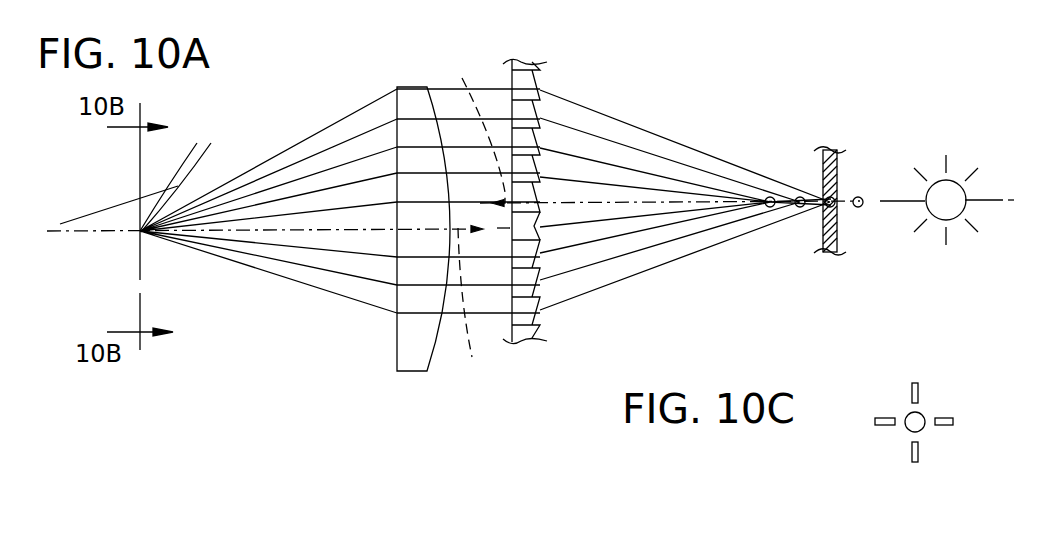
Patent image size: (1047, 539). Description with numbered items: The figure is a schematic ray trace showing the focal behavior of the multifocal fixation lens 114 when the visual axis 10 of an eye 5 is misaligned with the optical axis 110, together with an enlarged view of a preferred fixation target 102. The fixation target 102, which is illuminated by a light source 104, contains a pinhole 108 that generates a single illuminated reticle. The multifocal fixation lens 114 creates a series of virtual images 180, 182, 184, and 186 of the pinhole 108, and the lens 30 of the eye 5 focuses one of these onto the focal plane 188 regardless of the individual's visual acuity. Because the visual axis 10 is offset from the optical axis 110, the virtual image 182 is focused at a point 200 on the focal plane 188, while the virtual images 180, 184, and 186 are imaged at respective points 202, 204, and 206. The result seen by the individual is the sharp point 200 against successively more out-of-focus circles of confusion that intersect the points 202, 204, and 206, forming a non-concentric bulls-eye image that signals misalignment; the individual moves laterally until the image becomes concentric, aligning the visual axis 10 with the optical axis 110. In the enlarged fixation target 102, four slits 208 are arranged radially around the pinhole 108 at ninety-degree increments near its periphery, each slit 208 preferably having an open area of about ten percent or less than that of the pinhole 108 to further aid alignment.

In FIG. 10A, the eye 5 is at (290, 104).
In FIG. 10A, the visual axis 10 is at (474, 310).
In FIG. 10A, the lens 30 is at (408, 348).
In FIG. 10A, the fixation target 102 is at (912, 124).
In FIG. 10C, the fixation target 102 is at (862, 444).
In FIG. 10A, the sun / light source 104 is at (948, 188).
In FIG. 10A, the pinhole 108 is at (840, 208).
In FIG. 10C, the pinhole 108 is at (923, 413).
In FIG. 10A, the optical axis 110 is at (472, 130).
In FIG. 10A, the multifocal fixation lens 114 is at (530, 70).
In FIG. 10A, the virtual image 180 is at (770, 196).
In FIG. 10A, the virtual image 182 is at (798, 207).
In FIG. 10A, the virtual image 184 is at (826, 196).
In FIG. 10A, the virtual image 186 is at (862, 197).
In FIG. 10A, the focal plane 188 is at (140, 188).
In FIG. 10A, the point 200 is at (138, 238).
In FIG. 10A, the point 202 is at (183, 175).
In FIG. 10A, the point 204 is at (140, 200).
In FIG. 10A, the point 206 is at (140, 191).
In FIG. 10C, the slits 208 is at (890, 418).